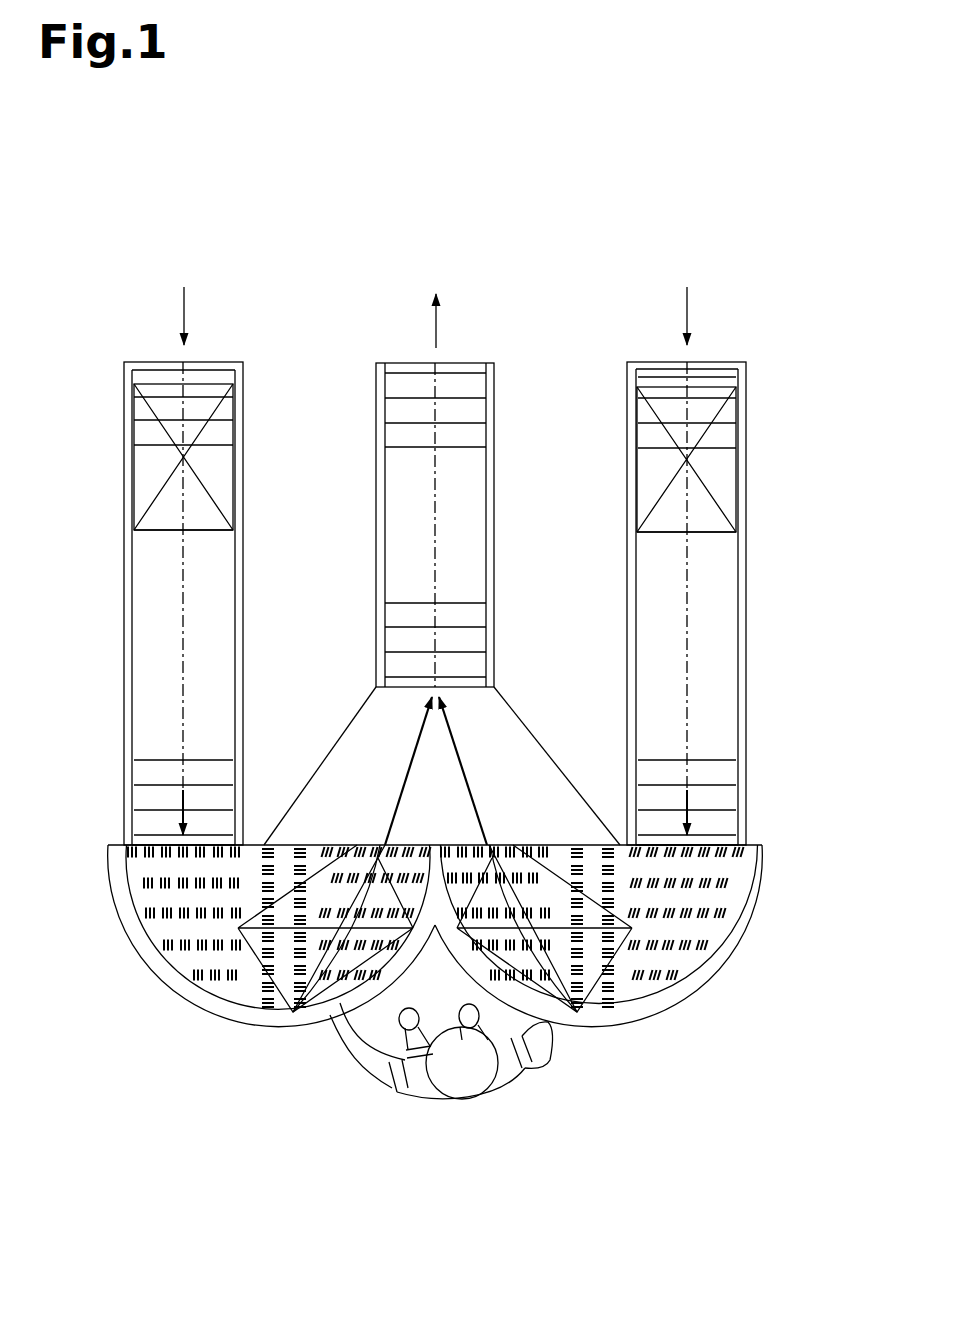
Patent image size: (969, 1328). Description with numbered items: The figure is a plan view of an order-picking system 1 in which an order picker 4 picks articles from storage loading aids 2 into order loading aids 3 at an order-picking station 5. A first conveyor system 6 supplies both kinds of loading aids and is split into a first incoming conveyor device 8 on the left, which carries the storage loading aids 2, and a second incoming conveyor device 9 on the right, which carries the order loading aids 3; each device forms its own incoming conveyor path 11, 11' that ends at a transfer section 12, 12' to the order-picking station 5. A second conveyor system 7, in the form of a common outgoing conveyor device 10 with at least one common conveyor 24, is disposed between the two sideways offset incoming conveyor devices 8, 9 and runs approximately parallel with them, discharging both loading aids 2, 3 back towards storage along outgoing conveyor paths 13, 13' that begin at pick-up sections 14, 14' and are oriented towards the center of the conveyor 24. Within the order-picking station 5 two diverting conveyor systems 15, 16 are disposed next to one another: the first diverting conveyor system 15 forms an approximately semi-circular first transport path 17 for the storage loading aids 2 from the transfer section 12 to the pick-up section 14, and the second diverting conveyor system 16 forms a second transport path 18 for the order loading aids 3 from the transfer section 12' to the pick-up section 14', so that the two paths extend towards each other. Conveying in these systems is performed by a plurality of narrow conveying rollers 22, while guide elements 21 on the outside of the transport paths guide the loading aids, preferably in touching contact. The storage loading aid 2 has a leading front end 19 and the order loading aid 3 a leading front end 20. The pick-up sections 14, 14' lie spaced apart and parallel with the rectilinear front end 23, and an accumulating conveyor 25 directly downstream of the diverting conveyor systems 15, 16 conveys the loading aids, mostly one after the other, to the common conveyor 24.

The order-picking system 1 is at (686, 154).
The storage loading aid 2 is at (197, 462).
The order loading aid 3 is at (702, 465).
The order picker 4 is at (480, 1090).
The order-picking station 5 is at (714, 1085).
The first conveyor system 6 is at (216, 341).
The second conveyor system 7 is at (452, 346).
The first incoming conveyor device 8 is at (268, 385).
The second incoming conveyor device 9 is at (750, 356).
The common outgoing conveyor device 10 is at (478, 430).
The incoming conveyor path 11 is at (134, 561).
The incoming conveyor path 11' is at (741, 561).
The transfer section 12 is at (228, 765).
The transfer section 12' is at (717, 780).
The outgoing conveyor path 13 is at (370, 739).
The outgoing conveyor path 13' is at (509, 759).
The pick-up section 14 is at (326, 878).
The pick-up section 14' is at (540, 865).
The first diverting conveyor system 15 is at (170, 1002).
The second diverting conveyor system 16 is at (744, 958).
The first transport path 17 is at (238, 928).
The second transport path 18 is at (632, 928).
The front end 19 is at (200, 532).
The front end 20 is at (706, 537).
The guide element 21 is at (253, 1027).
The conveying roller 22 is at (692, 998).
The front end 23 is at (621, 846).
The common conveyor 24 is at (456, 502).
The accumulating conveyor 25 is at (521, 706).